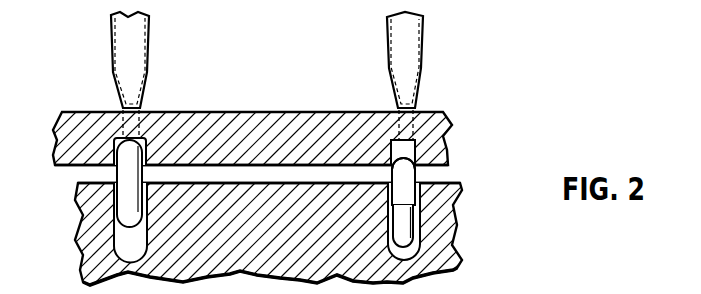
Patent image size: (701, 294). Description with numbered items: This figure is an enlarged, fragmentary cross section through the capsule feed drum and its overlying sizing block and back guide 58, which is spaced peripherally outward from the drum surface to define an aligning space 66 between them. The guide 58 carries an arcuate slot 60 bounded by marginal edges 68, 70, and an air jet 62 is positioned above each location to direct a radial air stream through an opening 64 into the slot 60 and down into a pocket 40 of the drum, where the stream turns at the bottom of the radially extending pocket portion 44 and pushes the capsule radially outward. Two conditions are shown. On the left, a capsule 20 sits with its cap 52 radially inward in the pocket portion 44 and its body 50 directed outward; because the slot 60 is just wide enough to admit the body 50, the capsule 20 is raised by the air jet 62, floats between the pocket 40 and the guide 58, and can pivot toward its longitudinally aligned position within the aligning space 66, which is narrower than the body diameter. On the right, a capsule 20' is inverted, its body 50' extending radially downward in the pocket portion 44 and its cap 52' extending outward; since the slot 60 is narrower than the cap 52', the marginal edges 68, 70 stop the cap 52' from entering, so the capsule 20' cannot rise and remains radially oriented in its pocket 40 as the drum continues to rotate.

The capsule 20 is at (77, 179).
The capsule 20' is at (449, 222).
The pocket 40 is at (417, 253).
The radially extending pocket portion 44 is at (122, 240).
The capsule body 50 is at (192, 151).
The capsule body 50' is at (473, 222).
The capsule cap 52 is at (89, 188).
The capsule cap 52' is at (447, 180).
The sizing block and back guide 58 is at (254, 113).
The arcuate slot 60 is at (144, 140).
The air jet 62 is at (140, 60).
The opening 64 is at (155, 112).
The aligning space 66 is at (275, 172).
The marginal edge 68 is at (392, 155).
The marginal edge 70 is at (422, 164).